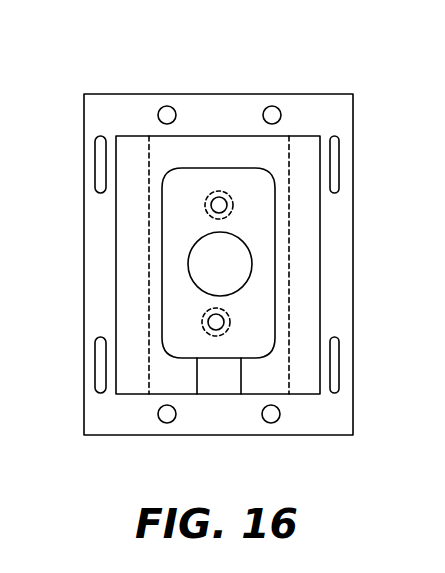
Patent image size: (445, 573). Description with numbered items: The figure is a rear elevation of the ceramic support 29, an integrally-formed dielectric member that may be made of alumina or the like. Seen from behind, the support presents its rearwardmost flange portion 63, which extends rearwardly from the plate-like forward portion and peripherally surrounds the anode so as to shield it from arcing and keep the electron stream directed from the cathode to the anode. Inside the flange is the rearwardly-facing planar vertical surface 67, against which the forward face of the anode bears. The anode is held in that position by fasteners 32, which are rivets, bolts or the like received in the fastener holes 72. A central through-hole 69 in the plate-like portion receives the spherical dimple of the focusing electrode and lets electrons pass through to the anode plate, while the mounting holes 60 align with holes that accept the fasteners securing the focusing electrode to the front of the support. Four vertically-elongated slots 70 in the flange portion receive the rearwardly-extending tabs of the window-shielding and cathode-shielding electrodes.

The ceramic support 29 is at (75, 75).
The fasteners 32 is at (211, 205).
The mounting holes 60 is at (165, 108).
The rearwardmost flange portion 63 is at (125, 237).
The rearwardly-facing planar vertical surface 67 is at (173, 292).
The through-hole 69 is at (238, 255).
The vertically-elongated slots 70 is at (100, 148).
The fastener holes 72 is at (233, 205).